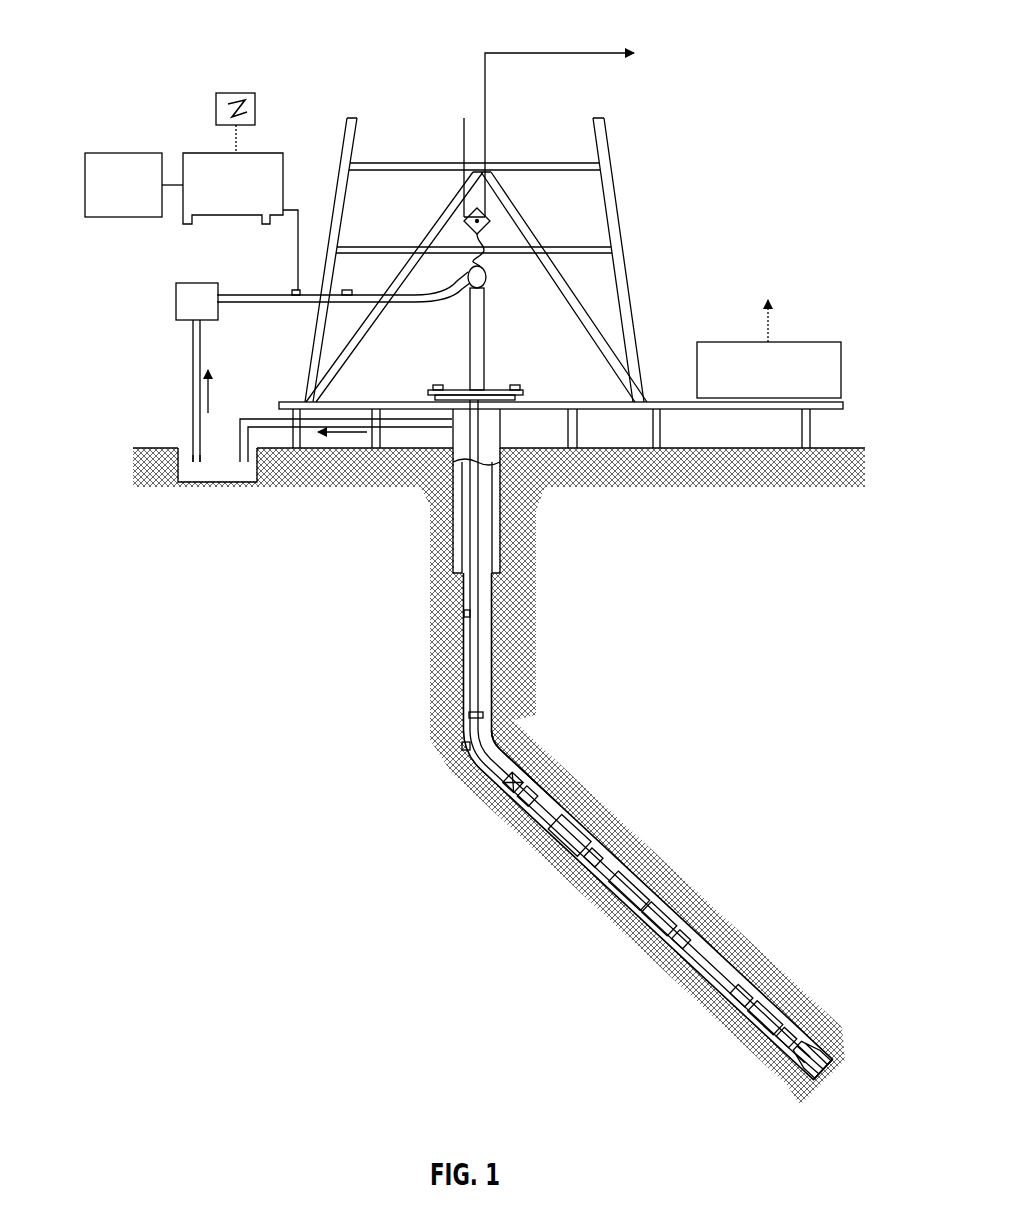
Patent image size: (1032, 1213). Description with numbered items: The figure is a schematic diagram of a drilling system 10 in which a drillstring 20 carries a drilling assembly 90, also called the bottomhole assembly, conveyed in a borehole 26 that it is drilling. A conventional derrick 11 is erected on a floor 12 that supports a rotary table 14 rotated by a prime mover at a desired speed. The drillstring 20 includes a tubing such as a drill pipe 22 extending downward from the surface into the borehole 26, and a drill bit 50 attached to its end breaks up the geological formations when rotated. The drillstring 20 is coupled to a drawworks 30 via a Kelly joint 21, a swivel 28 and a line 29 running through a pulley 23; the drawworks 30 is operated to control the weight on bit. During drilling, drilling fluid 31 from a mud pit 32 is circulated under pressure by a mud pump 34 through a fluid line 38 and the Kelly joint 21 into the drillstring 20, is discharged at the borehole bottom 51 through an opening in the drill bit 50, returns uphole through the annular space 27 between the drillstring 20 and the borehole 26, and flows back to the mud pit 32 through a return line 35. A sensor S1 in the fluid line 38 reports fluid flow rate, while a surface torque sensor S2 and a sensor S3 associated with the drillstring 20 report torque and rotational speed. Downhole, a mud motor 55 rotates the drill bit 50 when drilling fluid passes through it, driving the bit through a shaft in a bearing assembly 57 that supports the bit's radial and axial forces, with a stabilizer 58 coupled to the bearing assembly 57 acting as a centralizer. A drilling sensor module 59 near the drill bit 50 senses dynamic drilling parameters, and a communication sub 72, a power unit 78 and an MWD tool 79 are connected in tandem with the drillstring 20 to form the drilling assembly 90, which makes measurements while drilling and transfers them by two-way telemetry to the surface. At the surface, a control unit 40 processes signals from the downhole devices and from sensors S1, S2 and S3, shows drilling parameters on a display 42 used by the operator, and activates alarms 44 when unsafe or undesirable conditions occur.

The drilling system 10 is at (408, 62).
The derrick 11 is at (628, 262).
The floor 12 is at (648, 402).
The rotary table 14 is at (490, 390).
The drillstring 20 is at (488, 663).
The Kelly joint 21 is at (486, 318).
The drill pipe 22 is at (464, 645).
The pulley 23 is at (481, 220).
The borehole 26 is at (496, 742).
The annular space 27 is at (512, 774).
The swivel 28 is at (469, 288).
The line 29 is at (488, 135).
The drawworks 30 is at (810, 342).
The drilling fluid 31 is at (188, 455).
The mud pit 32 is at (210, 481).
The mud pump 34 is at (191, 283).
The return line 35 is at (420, 430).
The fluid line 38 is at (294, 304).
The surface control unit 40 is at (217, 152).
The display/monitor 42 is at (232, 93).
The alarms 44 is at (130, 218).
The drill bit 50 is at (804, 1043).
The borehole bottom 51 is at (790, 1100).
The downhole motor 55 is at (670, 912).
The bearing assembly 57 is at (773, 1017).
The stabilizer 58 is at (775, 1030).
The drilling sensor module 59 is at (765, 1051).
The communication sub 72 is at (462, 745).
The power unit 78 is at (490, 777).
The MWD tool 79 is at (506, 802).
The drilling assembly 90 is at (690, 822).
The sensor S1 is at (346, 290).
The surface torque sensor S2 is at (516, 385).
The sensor S3 is at (438, 385).